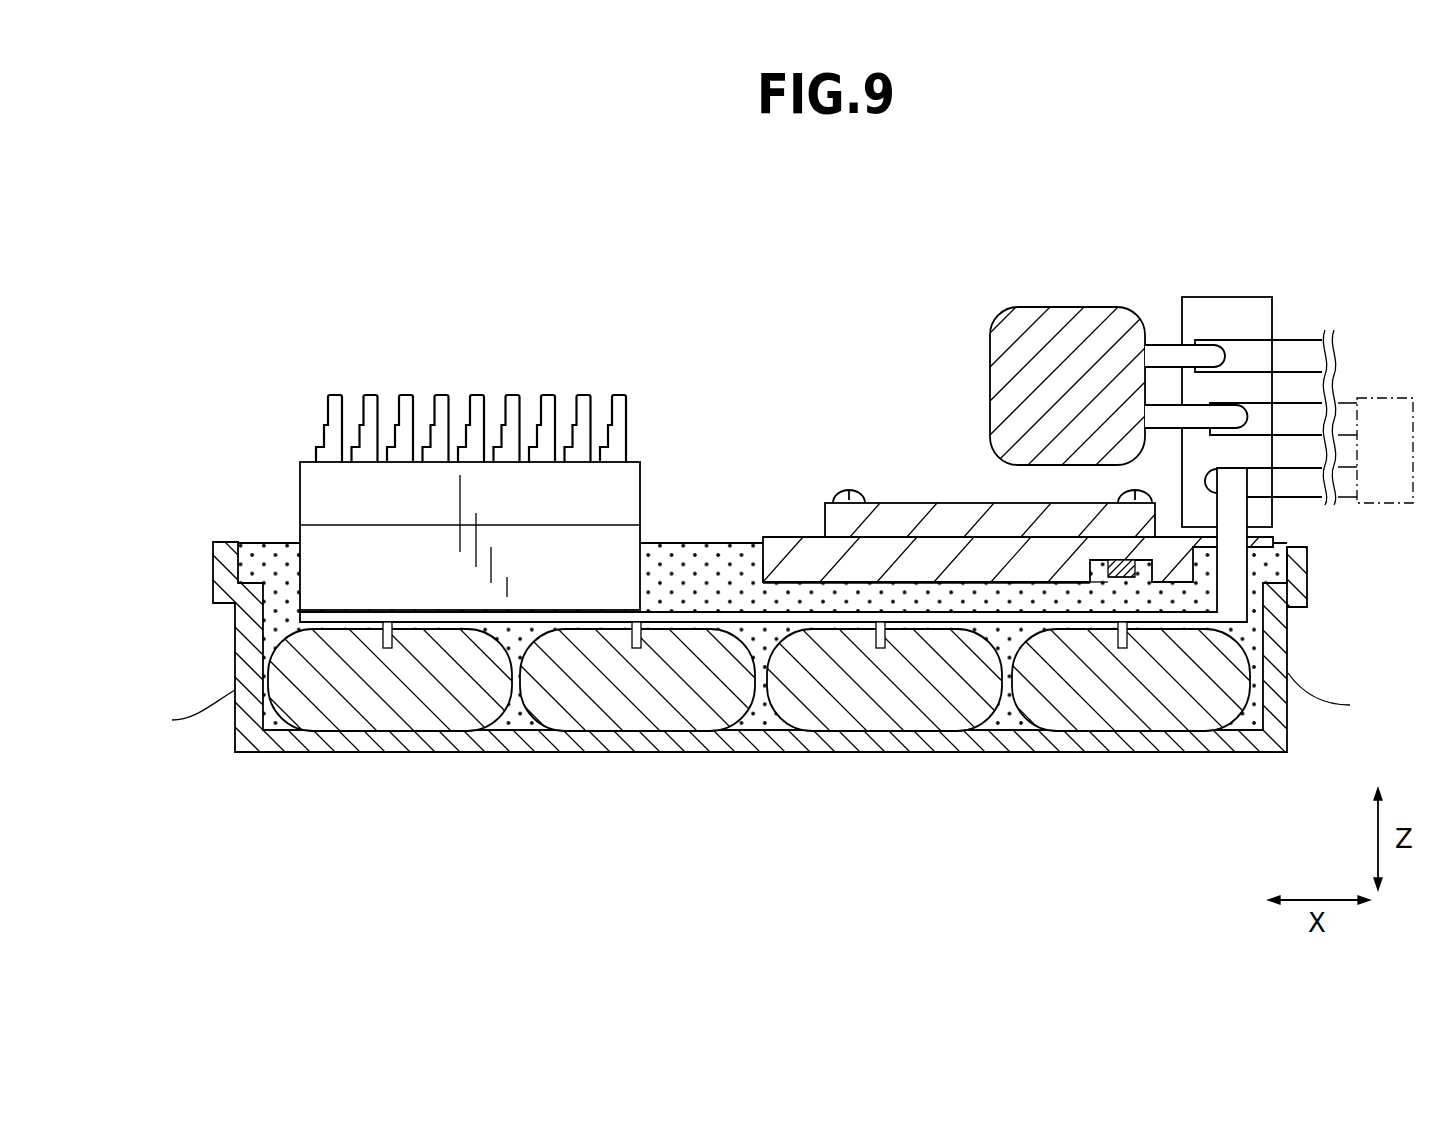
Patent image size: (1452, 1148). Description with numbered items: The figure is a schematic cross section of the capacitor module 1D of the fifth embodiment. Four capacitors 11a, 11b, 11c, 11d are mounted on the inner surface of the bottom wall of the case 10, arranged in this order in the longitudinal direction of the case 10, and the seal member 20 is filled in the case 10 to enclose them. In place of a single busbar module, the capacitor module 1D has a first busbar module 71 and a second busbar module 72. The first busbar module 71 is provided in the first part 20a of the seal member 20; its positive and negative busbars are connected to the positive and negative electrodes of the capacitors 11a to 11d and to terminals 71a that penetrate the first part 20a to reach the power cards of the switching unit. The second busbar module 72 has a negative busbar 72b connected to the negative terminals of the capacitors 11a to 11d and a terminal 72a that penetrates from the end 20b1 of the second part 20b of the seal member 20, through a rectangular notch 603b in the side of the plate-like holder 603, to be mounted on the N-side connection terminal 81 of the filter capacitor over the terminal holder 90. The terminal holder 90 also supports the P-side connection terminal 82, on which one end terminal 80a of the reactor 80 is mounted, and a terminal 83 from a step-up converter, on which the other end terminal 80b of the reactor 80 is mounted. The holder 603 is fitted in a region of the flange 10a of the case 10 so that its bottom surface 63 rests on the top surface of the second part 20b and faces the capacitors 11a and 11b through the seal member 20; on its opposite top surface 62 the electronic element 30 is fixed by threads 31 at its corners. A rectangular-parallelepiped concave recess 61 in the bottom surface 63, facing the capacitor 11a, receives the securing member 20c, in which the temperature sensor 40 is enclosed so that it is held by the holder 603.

The capacitor module 1D is at (1268, 246).
The case 10 is at (522, 738).
The flange 10a is at (1290, 568).
The capacitor 11a is at (1070, 720).
The capacitor 11b is at (833, 707).
The capacitor 11c is at (655, 702).
The capacitor 11d is at (362, 692).
The seal member 20 is at (753, 717).
The first part of the seal member 20a is at (277, 538).
The second part of the seal member 20b is at (787, 560).
The end of the second part 20b1 is at (1273, 558).
The securing member 20c is at (1102, 560).
The electronic element 30 is at (920, 517).
The thread 31 is at (845, 490).
The temperature sensor 40 is at (1140, 570).
The concave recess 61 is at (1130, 610).
The top surface of the holder 62 is at (1000, 537).
The bottom surface of the holder 63 is at (957, 585).
The first busbar module 71 is at (448, 580).
The terminals 71a is at (630, 380).
The second busbar module 72 is at (1183, 617).
The terminal 72a is at (1230, 503).
The negative busbar 72b is at (410, 615).
The reactor 80 is at (1068, 347).
The end terminal of the reactor 80a is at (1232, 415).
The other end terminal of the reactor 80b is at (1168, 355).
The N-side connection terminal 81 is at (1265, 478).
The P-side connection terminal 82 is at (1293, 417).
The terminal 83 is at (1293, 355).
The terminal holder 90 is at (1220, 305).
The holder 603 is at (805, 528).
The rectangular notch 603b is at (1273, 540).